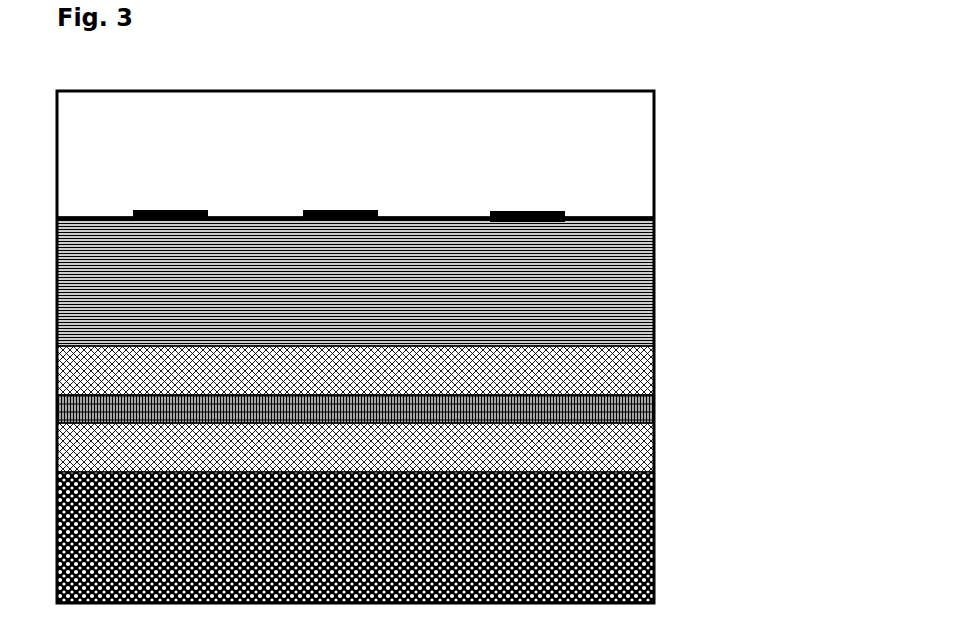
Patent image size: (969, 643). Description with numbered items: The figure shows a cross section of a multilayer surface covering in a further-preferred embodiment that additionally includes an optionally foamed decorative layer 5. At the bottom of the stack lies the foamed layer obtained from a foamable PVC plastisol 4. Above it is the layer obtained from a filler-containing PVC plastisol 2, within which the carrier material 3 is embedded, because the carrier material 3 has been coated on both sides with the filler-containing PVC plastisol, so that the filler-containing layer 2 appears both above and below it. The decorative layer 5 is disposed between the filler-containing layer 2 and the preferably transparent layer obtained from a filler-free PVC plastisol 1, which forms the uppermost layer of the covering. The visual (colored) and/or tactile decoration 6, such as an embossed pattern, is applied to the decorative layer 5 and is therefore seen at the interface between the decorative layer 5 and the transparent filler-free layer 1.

The layer obtained from a filler-free PVC plastisol 1 is at (355, 154).
The layer obtained from a filler-containing PVC plastisol 2 is at (632, 368).
The carrier material 3 is at (655, 415).
The foamed layer obtained from a foamable PVC plastisol 4 is at (355, 537).
The decorative layer 5 is at (355, 281).
The decoration 6 is at (170, 209).